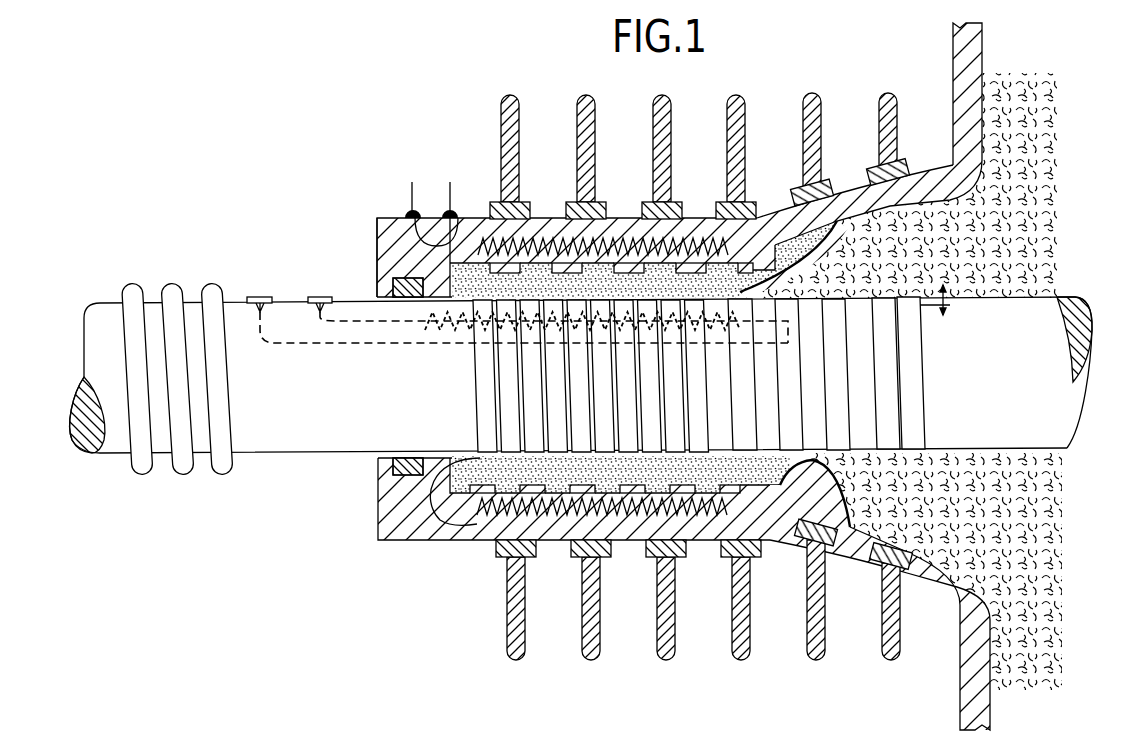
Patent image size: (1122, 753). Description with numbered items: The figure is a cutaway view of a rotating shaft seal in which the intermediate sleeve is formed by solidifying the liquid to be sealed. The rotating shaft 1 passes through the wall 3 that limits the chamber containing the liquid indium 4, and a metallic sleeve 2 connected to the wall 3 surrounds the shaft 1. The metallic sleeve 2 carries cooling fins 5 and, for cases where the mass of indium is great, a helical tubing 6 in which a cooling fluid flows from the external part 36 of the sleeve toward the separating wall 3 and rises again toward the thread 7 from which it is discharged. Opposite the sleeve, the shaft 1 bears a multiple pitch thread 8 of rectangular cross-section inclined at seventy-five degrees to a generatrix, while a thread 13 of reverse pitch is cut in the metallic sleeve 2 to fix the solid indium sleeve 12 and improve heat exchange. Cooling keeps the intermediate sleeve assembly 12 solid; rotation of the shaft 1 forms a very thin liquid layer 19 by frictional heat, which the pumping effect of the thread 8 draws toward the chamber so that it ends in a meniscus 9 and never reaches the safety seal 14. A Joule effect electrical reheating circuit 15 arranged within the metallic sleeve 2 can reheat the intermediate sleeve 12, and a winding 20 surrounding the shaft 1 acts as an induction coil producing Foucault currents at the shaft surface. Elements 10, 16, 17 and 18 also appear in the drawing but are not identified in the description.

The rotating shaft 1 is at (1035, 317).
The metallic sleeve 2 is at (919, 186).
The wall 3 is at (967, 87).
The liquid indium 4 is at (1038, 123).
The cooling fins 5 is at (583, 147).
The helical tubing 6 is at (523, 208).
The thread 7 is at (870, 182).
The multiple pitch thread 8 is at (907, 460).
The meniscus 9 is at (463, 524).
The gap 10 is at (947, 304).
The intermediate sleeve assembly 12 is at (805, 245).
The thread 13 is at (618, 258).
The safety seal 14 is at (400, 278).
The Joule effect electrical reheating circuit 15 is at (448, 195).
The heater lead 16 is at (382, 345).
The clip 17 is at (318, 297).
The clip 18 is at (258, 297).
The liquid layer 19 is at (630, 460).
The winding 20 is at (132, 292).
The external part of the sleeve 36 is at (377, 232).